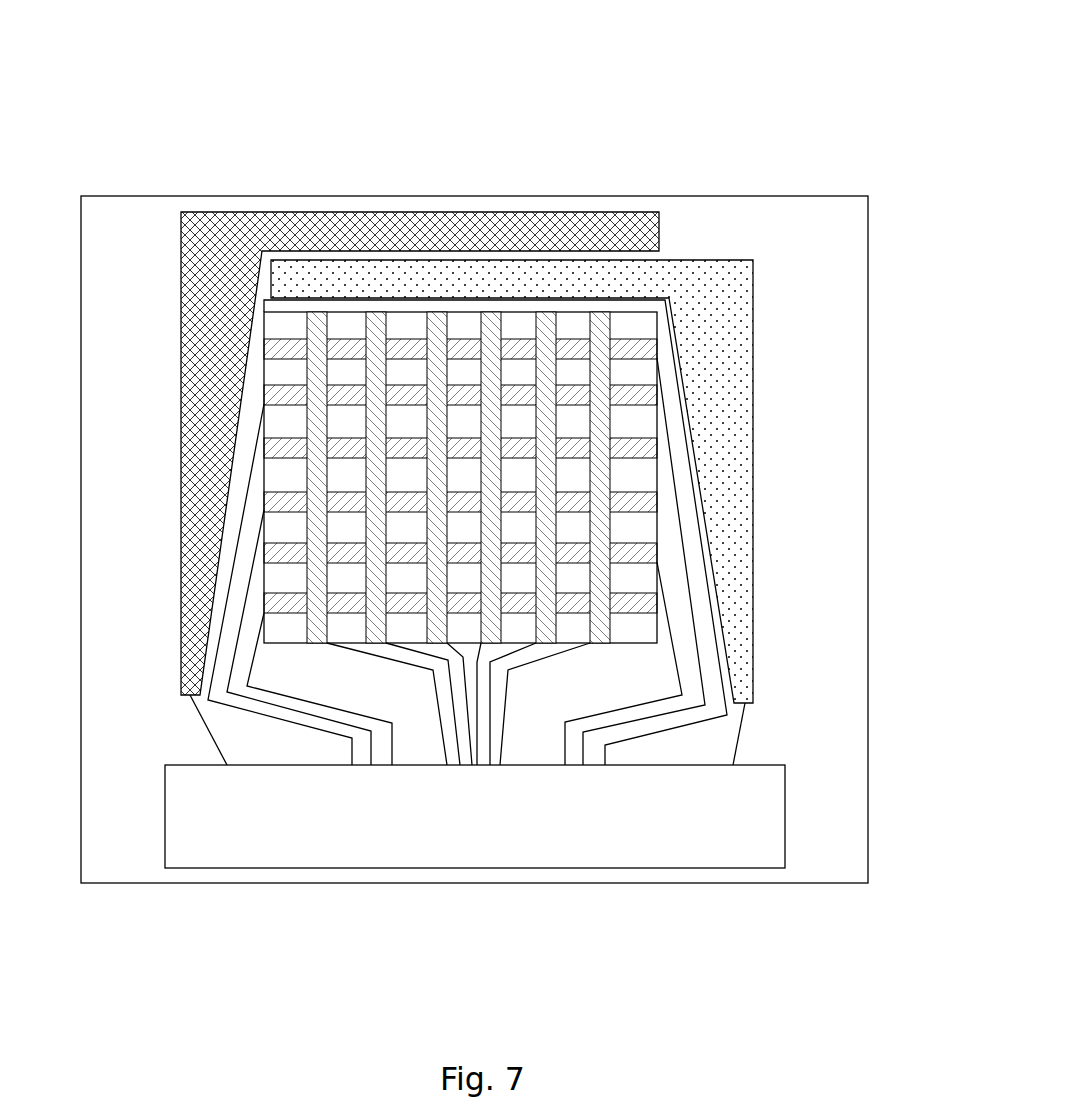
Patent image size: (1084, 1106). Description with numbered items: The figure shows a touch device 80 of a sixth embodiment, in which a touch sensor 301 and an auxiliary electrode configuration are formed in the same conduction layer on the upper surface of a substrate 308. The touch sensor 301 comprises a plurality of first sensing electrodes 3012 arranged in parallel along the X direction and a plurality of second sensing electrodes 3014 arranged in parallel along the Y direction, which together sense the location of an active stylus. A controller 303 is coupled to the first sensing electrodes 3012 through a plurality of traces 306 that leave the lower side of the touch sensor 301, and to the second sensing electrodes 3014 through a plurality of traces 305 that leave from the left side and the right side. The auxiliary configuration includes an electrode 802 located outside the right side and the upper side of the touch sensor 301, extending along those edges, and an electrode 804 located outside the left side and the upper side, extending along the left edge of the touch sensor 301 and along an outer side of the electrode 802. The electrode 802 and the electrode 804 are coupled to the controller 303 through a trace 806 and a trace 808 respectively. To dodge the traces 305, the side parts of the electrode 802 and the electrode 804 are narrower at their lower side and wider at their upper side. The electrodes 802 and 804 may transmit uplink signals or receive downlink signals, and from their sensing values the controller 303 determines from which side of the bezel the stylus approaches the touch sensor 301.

The touch device 80 is at (817, 110).
The substrate 308 is at (872, 513).
The electrode 804 is at (195, 287).
The electrode 802 is at (727, 328).
The touch sensor 301 is at (544, 489).
The first sensing electrodes 3012 is at (602, 422).
The second sensing electrodes 3014 is at (638, 448).
The traces 305 is at (351, 763).
The traces 306 is at (471, 766).
The controller 303 is at (767, 825).
The trace 808 is at (208, 735).
The trace 806 is at (742, 743).